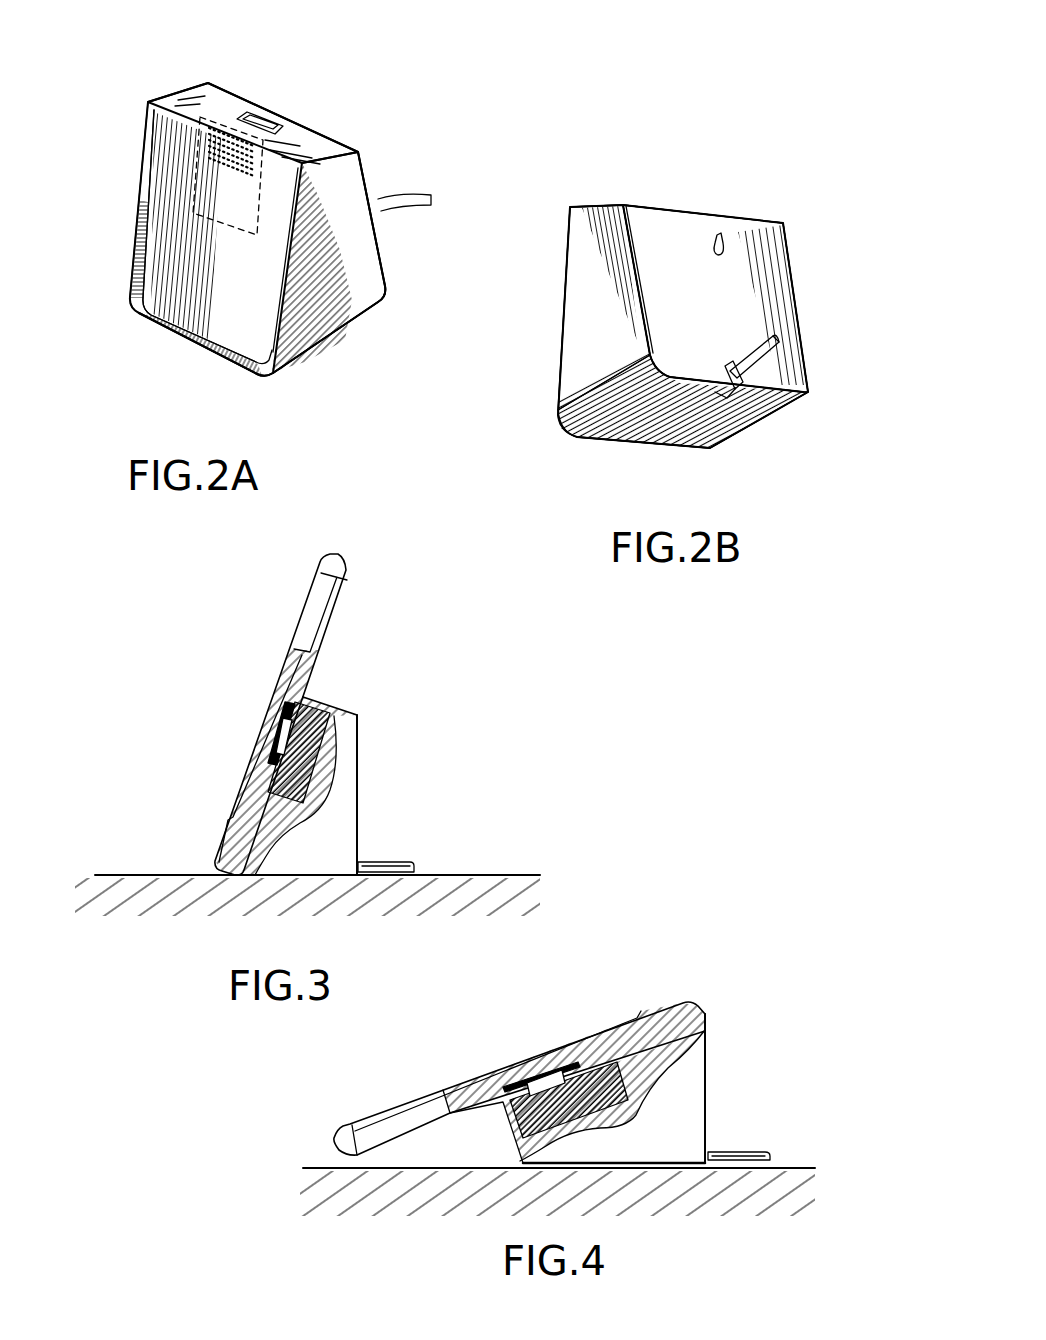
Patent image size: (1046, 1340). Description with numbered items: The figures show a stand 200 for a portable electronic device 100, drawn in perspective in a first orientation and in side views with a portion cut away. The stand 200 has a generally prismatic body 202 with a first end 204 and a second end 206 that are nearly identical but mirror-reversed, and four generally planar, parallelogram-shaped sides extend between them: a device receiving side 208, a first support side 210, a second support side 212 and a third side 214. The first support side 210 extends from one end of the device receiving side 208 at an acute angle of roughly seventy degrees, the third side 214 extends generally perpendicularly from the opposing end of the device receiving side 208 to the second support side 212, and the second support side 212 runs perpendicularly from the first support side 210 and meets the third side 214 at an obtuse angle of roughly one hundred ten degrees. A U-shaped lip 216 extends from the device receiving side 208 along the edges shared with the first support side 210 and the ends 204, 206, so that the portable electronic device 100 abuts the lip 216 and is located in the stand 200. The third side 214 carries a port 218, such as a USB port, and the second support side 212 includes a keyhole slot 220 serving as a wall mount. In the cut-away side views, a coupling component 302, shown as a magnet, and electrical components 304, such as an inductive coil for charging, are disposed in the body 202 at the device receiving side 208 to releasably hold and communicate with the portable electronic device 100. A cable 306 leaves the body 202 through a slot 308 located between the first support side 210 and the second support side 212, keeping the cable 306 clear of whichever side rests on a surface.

In FIG. 3, the portable electronic device 100 is at (342, 585).
In FIG. 4, the portable electronic device 100 is at (679, 1000).
In FIG. 2A, the stand 200 is at (308, 436).
In FIG. 2B, the stand 200 is at (588, 494).
In FIG. 3, the stand 200 is at (346, 700).
In FIG. 4, the stand 200 is at (712, 1050).
In FIG. 2A, the body 202 is at (385, 283).
In FIG. 3, the body 202 is at (357, 813).
In FIG. 4, the body 202 is at (708, 1128).
In FIG. 2A, the first end 204 is at (320, 300).
In FIG. 2B, the first end 204 is at (587, 355).
In FIG. 2A, the second end 206 is at (193, 88).
In FIG. 2A, the device receiving side 208 is at (183, 272).
In FIG. 2B, the first support side 210 is at (700, 418).
In FIG. 2B, the second support side 212 is at (763, 247).
In FIG. 2A, the third side 214 is at (183, 100).
In FIG. 2A, the lip 216 is at (213, 345).
In FIG. 2A, the port 218 is at (258, 118).
In FIG. 2B, the keyhole slot 220 is at (720, 235).
In FIG. 3, the coupling component 302 is at (293, 737).
In FIG. 4, the coupling component 302 is at (557, 1087).
In FIG. 3, the electrical components 304 is at (303, 765).
In FIG. 4, the electrical components 304 is at (593, 1103).
In FIG. 3, the cable 306 is at (397, 862).
In FIG. 4, the cable 306 is at (767, 1158).
In FIG. 2B, the slot 308 is at (733, 388).